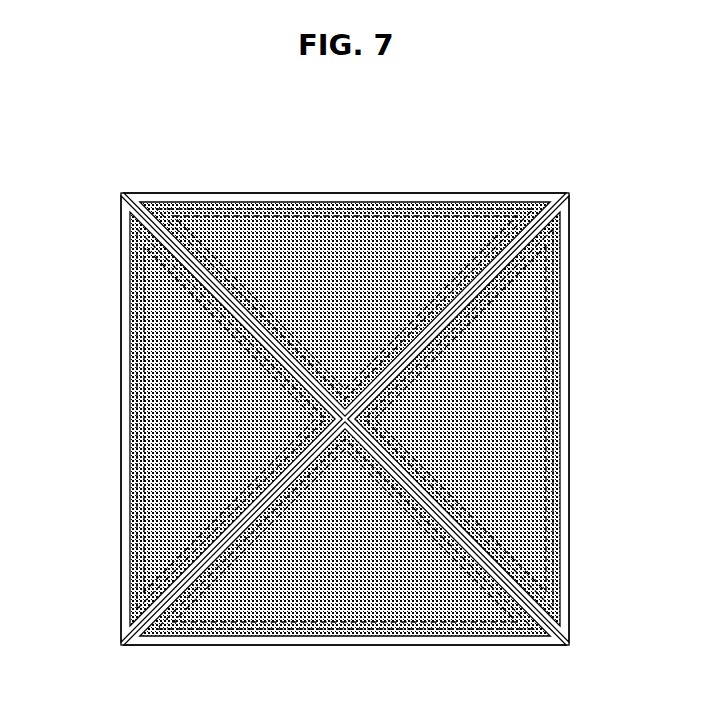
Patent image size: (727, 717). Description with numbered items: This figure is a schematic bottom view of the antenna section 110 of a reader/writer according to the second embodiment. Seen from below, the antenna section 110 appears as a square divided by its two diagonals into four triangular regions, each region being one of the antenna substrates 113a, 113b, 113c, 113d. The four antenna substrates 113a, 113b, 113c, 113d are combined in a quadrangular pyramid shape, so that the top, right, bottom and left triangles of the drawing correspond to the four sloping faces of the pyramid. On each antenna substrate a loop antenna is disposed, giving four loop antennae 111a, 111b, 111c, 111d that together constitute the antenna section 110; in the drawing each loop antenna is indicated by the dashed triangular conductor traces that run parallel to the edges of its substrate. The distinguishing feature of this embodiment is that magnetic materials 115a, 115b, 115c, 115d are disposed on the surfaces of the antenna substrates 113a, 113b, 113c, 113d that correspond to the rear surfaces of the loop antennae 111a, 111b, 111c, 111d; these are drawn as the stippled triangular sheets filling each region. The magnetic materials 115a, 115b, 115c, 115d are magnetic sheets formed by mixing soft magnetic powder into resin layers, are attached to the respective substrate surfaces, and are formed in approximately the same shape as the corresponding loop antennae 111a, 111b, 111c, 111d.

The antenna section 110 is at (574, 163).
The loop antenna 111a is at (259, 208).
The antenna substrate 113a is at (344, 194).
The magnetic material 115a is at (427, 203).
The loop antenna 111b is at (553, 358).
The antenna substrate 113b is at (570, 416).
The magnetic material 115b is at (558, 471).
The loop antenna 111c is at (265, 630).
The antenna substrate 113c is at (347, 646).
The magnetic material 115c is at (430, 634).
The loop antenna 111d is at (140, 360).
The antenna substrate 113d is at (121, 420).
The magnetic material 115d is at (138, 474).